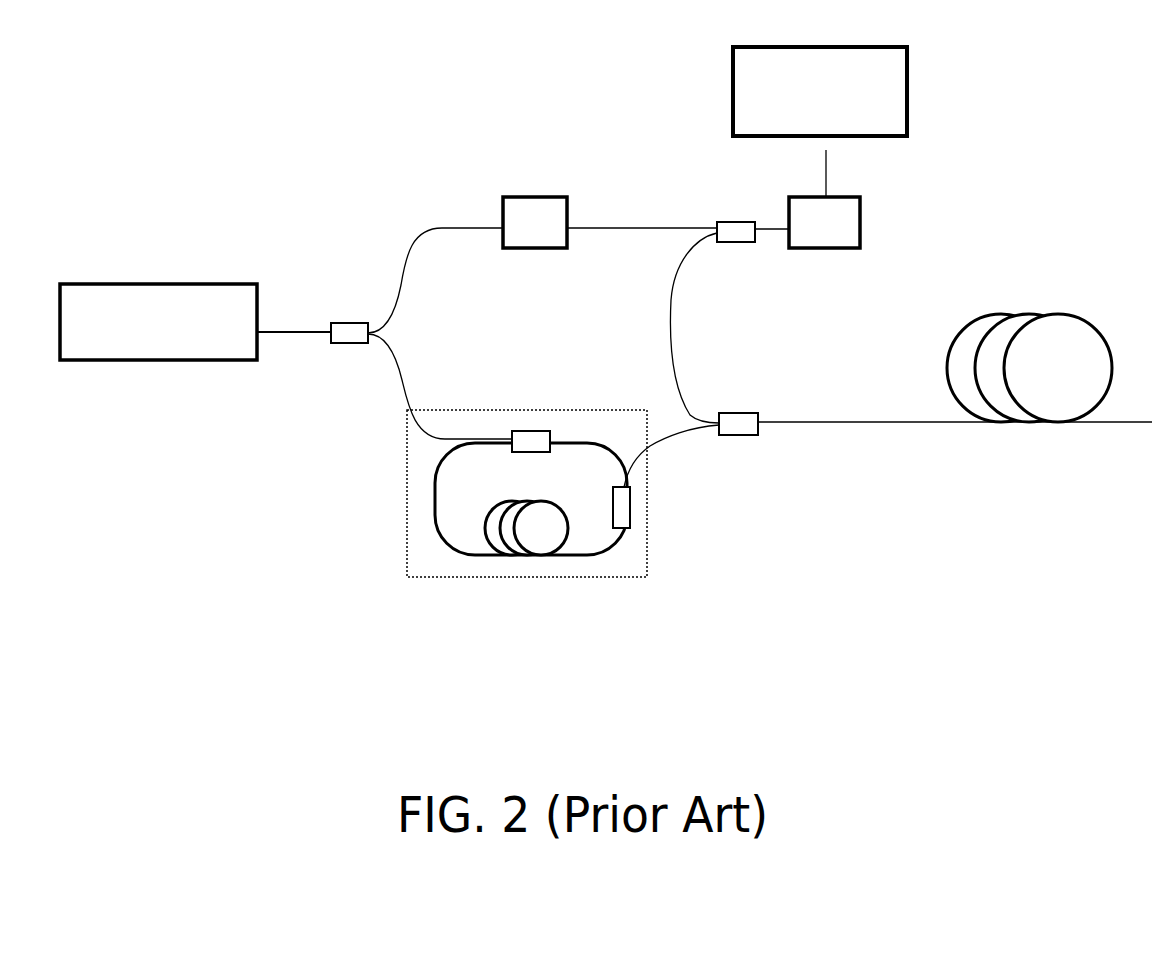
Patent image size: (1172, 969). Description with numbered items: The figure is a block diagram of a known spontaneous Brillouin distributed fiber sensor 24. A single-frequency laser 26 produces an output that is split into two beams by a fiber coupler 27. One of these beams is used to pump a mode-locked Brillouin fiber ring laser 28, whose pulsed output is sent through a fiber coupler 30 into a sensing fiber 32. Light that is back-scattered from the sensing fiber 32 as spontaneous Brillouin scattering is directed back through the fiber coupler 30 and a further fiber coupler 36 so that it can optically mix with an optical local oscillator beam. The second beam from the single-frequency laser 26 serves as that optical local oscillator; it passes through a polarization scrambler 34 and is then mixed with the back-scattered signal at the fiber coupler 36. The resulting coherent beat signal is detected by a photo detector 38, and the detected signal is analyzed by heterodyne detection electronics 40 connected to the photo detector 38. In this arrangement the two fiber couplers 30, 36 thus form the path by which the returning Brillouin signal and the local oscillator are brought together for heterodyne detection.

The spontaneous Brillouin distributed fiber sensor 24 is at (322, 134).
The single-frequency laser 26 is at (147, 283).
The fiber coupler 27 is at (340, 334).
The mode-locked Brillouin fiber ring laser 28 is at (407, 500).
The fiber coupler 30 is at (742, 435).
The sensing fiber 32 is at (1045, 315).
The polarization scrambler 34 is at (552, 206).
The fiber coupler 36 is at (720, 205).
The photo detector 38 is at (860, 217).
The heterodyne detection electronics 40 is at (910, 77).